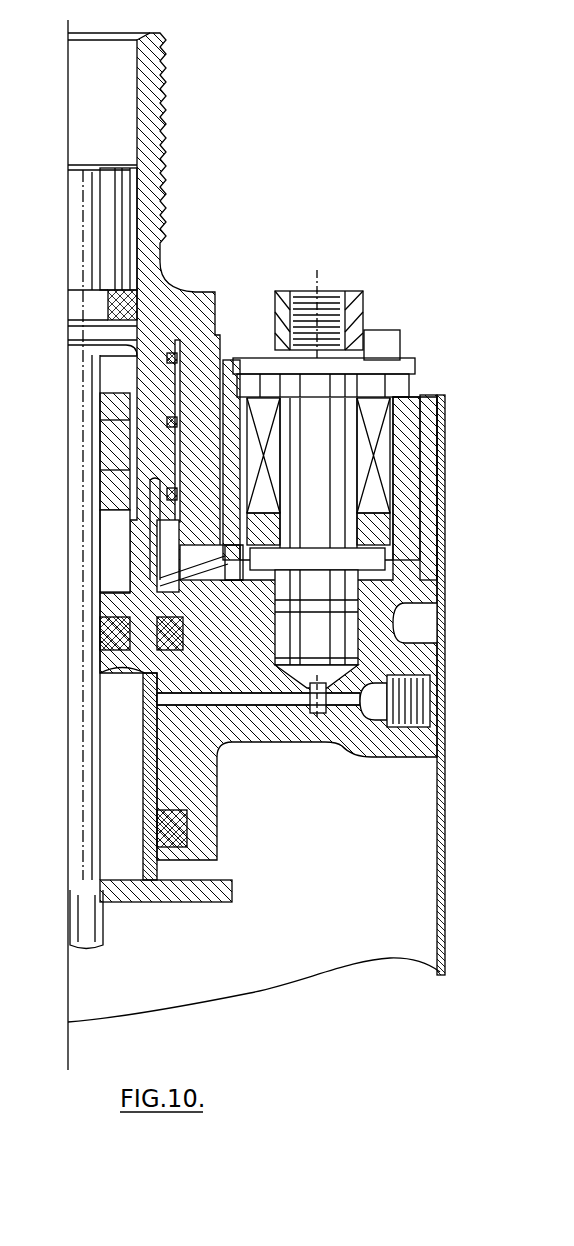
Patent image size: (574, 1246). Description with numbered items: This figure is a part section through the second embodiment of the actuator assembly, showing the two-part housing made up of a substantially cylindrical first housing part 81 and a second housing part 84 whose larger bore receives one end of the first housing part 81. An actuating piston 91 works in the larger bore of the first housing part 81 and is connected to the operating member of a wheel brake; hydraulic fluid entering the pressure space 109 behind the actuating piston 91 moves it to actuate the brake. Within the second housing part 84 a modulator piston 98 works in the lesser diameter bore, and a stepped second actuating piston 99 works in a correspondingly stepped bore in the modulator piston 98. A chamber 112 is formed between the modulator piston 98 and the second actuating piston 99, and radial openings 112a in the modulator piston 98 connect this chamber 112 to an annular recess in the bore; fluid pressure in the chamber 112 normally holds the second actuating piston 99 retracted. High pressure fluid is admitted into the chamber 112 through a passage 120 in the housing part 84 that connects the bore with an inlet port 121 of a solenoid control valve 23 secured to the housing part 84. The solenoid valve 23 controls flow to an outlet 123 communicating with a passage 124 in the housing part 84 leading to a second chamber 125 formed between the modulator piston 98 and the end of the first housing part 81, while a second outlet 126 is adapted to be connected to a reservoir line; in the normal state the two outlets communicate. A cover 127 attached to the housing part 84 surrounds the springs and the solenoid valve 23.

The solenoid control valve 23 is at (332, 481).
The first housing part 81 is at (197, 292).
The second housing part 84 is at (428, 598).
The actuating piston 91 is at (104, 234).
The modulator piston 98 is at (98, 606).
The second actuating piston 99 is at (75, 458).
The pressure space 109 is at (105, 352).
The chamber 112 is at (118, 733).
The radial openings 112a is at (125, 668).
The passage 120 is at (258, 706).
The inlet port 121 is at (424, 748).
The outlet 123 is at (240, 584).
The passage 124 is at (203, 562).
The chamber 125 is at (110, 532).
The second outlet 126 is at (335, 290).
The cover 127 is at (437, 832).